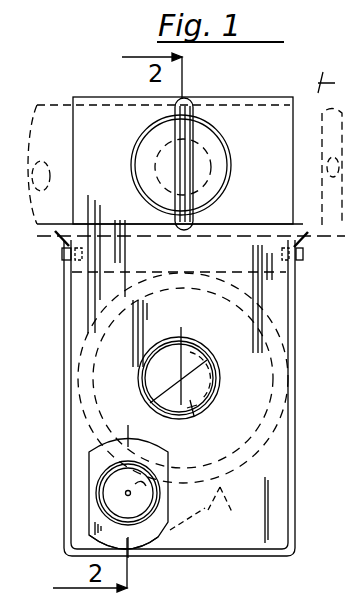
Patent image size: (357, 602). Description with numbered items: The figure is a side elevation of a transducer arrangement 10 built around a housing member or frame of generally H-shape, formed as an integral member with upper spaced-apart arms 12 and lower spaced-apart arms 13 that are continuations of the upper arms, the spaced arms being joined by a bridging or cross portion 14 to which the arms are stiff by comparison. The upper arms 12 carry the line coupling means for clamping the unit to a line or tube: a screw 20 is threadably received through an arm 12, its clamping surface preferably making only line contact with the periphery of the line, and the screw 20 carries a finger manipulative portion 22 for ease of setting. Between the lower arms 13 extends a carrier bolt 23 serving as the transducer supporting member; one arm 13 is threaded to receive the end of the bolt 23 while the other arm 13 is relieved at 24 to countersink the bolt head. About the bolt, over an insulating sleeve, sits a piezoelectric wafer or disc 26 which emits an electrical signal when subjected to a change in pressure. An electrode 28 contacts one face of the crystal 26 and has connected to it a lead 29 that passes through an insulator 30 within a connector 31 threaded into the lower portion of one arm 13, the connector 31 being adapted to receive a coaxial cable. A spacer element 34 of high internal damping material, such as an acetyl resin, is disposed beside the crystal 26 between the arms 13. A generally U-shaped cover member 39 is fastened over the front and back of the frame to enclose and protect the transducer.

The transducer arrangement 10 is at (266, 94).
The upper spaced-apart arms 12 is at (85, 127).
The lower spaced-apart arms 13 is at (278, 481).
The bridging or cross portion 14 is at (222, 238).
The screw 20 is at (241, 143).
The finger manipulative portion 22 is at (177, 179).
The carrier bolt 23 is at (191, 412).
The relieved portion 24 is at (216, 362).
The piezoelectric wafer or disc 26 is at (82, 420).
The electrode 28 is at (183, 407).
The lead 29 is at (128, 493).
The insulator 30 is at (113, 487).
The connector 31 is at (152, 538).
The damping element 34 is at (290, 413).
The U-shaped cover member 39 is at (63, 350).